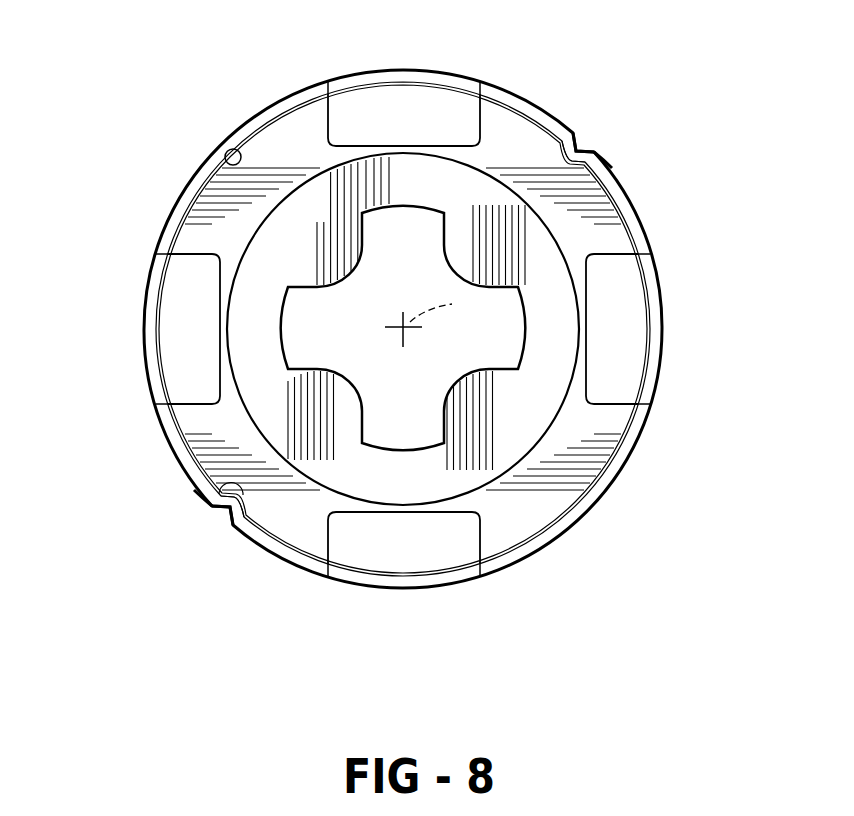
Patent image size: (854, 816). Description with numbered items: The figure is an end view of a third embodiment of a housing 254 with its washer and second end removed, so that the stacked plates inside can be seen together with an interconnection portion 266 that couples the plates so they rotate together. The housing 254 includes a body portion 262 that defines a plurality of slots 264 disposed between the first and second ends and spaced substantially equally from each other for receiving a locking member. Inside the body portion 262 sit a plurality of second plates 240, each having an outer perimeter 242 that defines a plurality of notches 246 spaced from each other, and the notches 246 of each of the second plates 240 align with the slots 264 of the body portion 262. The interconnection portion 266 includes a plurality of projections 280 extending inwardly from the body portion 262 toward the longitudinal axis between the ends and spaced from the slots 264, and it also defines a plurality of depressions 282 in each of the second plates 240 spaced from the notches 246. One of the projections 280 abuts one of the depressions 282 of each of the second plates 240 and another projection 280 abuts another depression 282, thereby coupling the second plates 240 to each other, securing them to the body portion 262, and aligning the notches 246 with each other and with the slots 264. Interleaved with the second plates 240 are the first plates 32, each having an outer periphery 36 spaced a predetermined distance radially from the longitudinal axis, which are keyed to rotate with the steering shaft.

The first plates 32 is at (457, 236).
The outer periphery 36 is at (567, 235).
The second plates 240 is at (580, 480).
The outer perimeter 242 is at (230, 148).
The notches 246 is at (368, 98).
The housing 254 is at (636, 215).
The body portion 262 is at (638, 440).
The slots 264 is at (440, 74).
The interconnection portion 266 is at (609, 131).
The projections 280 is at (572, 148).
The depressions 282 is at (553, 156).